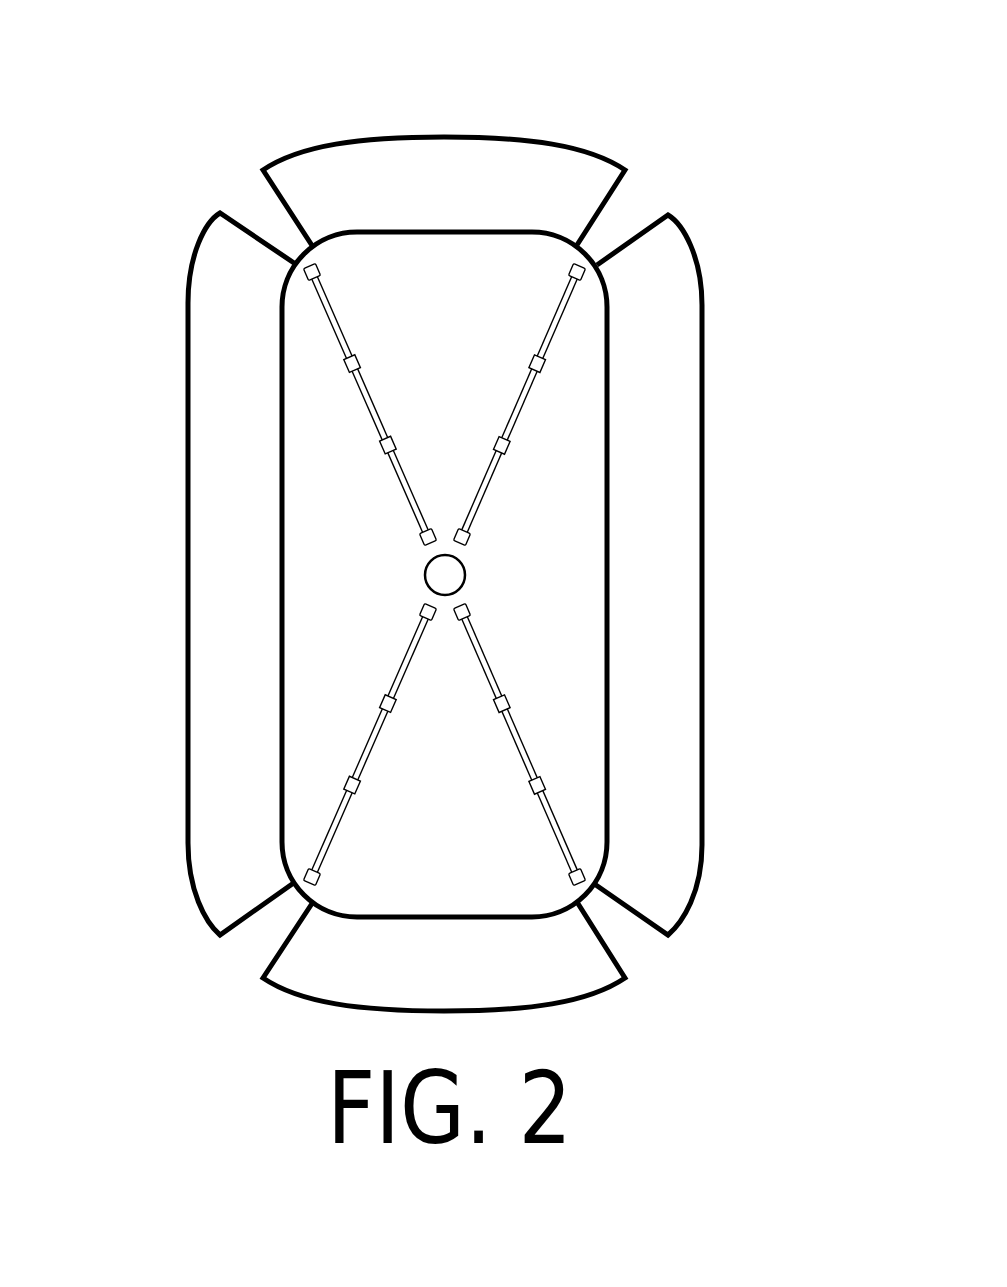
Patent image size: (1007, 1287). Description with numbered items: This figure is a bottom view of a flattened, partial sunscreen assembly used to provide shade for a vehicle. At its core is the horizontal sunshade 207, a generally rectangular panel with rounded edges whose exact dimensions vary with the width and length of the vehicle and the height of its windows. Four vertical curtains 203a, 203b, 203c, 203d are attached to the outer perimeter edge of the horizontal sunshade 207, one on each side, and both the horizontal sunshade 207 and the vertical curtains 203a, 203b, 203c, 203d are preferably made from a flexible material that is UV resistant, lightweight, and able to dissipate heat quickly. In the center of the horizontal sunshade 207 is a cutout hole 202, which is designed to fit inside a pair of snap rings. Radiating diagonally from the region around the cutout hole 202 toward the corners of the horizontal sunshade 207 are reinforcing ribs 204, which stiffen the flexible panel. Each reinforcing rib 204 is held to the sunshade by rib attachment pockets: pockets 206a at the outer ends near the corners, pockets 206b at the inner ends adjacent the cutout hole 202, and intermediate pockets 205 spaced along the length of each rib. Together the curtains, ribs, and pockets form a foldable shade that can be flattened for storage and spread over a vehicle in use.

The cutout hole 202 is at (467, 575).
The vertical curtain 203a is at (673, 320).
The vertical curtain 203b is at (525, 162).
The vertical curtain 203c is at (573, 960).
The vertical curtain 203d is at (213, 378).
The reinforcing ribs 204 is at (530, 393).
The rib attachment pocket 205 is at (508, 453).
The rib attachment pocket 206a is at (585, 282).
The rib attachment pocket 206b is at (473, 542).
The horizontal sunshade 207 is at (553, 627).